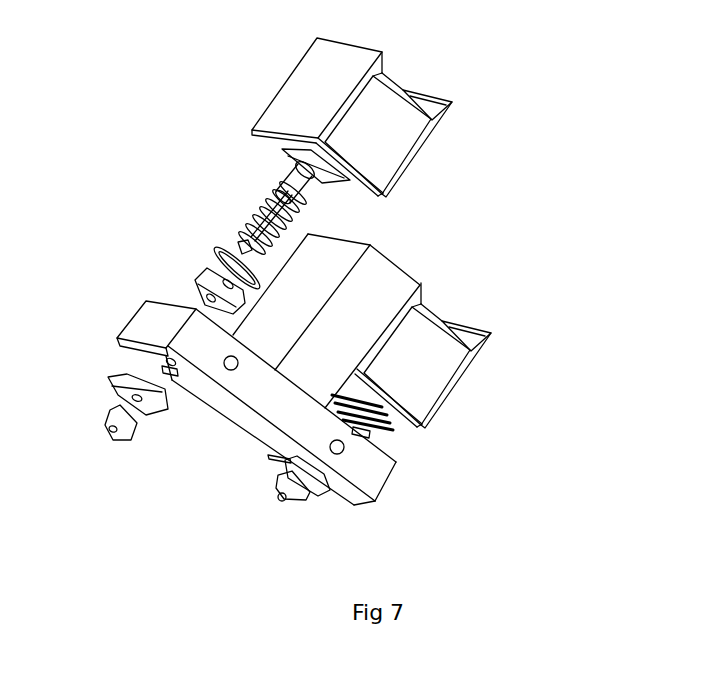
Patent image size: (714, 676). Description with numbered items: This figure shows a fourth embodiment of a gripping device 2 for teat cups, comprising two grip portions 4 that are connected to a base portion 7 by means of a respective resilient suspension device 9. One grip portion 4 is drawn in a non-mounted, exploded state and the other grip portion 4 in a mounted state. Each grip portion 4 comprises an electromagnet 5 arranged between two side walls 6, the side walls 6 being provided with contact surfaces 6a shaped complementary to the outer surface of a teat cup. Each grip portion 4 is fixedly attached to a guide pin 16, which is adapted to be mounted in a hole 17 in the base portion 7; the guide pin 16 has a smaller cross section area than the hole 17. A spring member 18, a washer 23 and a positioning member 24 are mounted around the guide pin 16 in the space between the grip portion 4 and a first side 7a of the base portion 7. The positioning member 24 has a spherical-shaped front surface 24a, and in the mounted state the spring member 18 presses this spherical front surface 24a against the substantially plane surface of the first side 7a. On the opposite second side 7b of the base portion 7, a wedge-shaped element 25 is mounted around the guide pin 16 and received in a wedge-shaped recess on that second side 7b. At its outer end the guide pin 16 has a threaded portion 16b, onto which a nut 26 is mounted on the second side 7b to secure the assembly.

The gripping device 2 is at (520, 237).
The grip portion 4 is at (293, 102).
The electromagnet 5 is at (392, 138).
The side wall 6 is at (432, 133).
The contact surface 6a is at (385, 62).
The base portion 7 is at (150, 317).
The first side of the base portion 7a is at (232, 326).
The second side of the base portion 7b is at (199, 397).
The resilient suspension device 9 is at (220, 202).
The guide pin 16 is at (302, 188).
The threaded portion 16b is at (240, 242).
The hole 17 is at (165, 362).
The spring member 18 is at (267, 200).
The washer 23 is at (217, 250).
The positioning member 24 is at (197, 280).
The front surface 24a is at (199, 293).
The wedge-shaped element 25 is at (118, 393).
The nut 26 is at (105, 427).